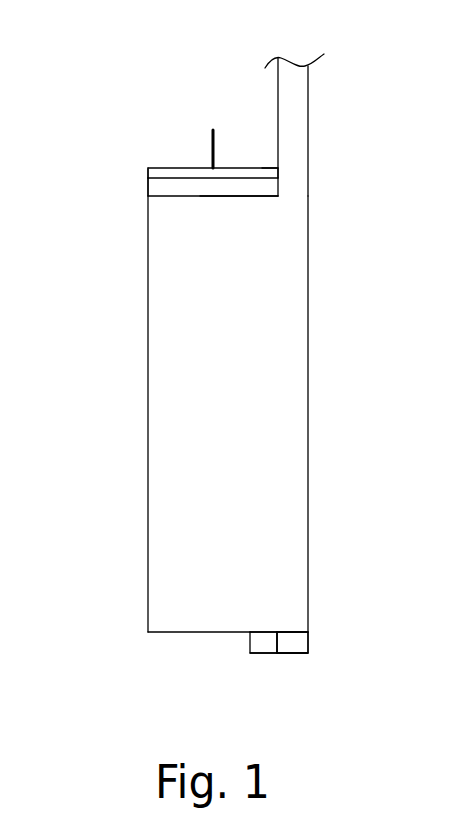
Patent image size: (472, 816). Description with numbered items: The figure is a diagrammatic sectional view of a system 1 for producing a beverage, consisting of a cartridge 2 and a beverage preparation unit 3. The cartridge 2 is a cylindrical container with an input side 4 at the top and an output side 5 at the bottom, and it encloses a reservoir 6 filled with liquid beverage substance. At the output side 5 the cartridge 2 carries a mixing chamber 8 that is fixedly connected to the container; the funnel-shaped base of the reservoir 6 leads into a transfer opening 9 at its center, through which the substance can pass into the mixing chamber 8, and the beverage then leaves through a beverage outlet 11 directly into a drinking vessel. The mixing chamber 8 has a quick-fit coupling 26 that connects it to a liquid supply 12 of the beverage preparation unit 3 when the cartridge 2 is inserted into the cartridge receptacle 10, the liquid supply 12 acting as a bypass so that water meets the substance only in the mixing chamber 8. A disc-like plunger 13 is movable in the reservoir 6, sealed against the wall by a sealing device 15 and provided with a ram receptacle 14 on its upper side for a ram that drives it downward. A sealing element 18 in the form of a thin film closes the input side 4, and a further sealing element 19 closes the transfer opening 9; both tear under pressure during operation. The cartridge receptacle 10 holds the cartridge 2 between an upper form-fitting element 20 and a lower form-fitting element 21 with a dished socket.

The system 1 is at (361, 69).
The cartridge 2 is at (308, 310).
The beverage preparation unit 3 is at (308, 143).
The input side 4 is at (167, 201).
The output side 5 is at (129, 632).
The reservoir 6 is at (139, 442).
The mixing chamber 8 is at (257, 647).
The transfer opening 9 is at (275, 632).
The cartridge receptacle 10 is at (165, 168).
The beverage outlet 11 is at (263, 655).
The liquid supply 12 is at (319, 440).
The plunger 13 is at (240, 187).
The ram receptacle 14 is at (212, 152).
The sealing device 15 is at (163, 196).
The sealing element 18 is at (265, 168).
The further sealing element 19 is at (260, 632).
The upper form-fitting element 20 is at (150, 135).
The lower form-fitting element 21 is at (295, 655).
The quick-fit coupling 26 is at (298, 645).